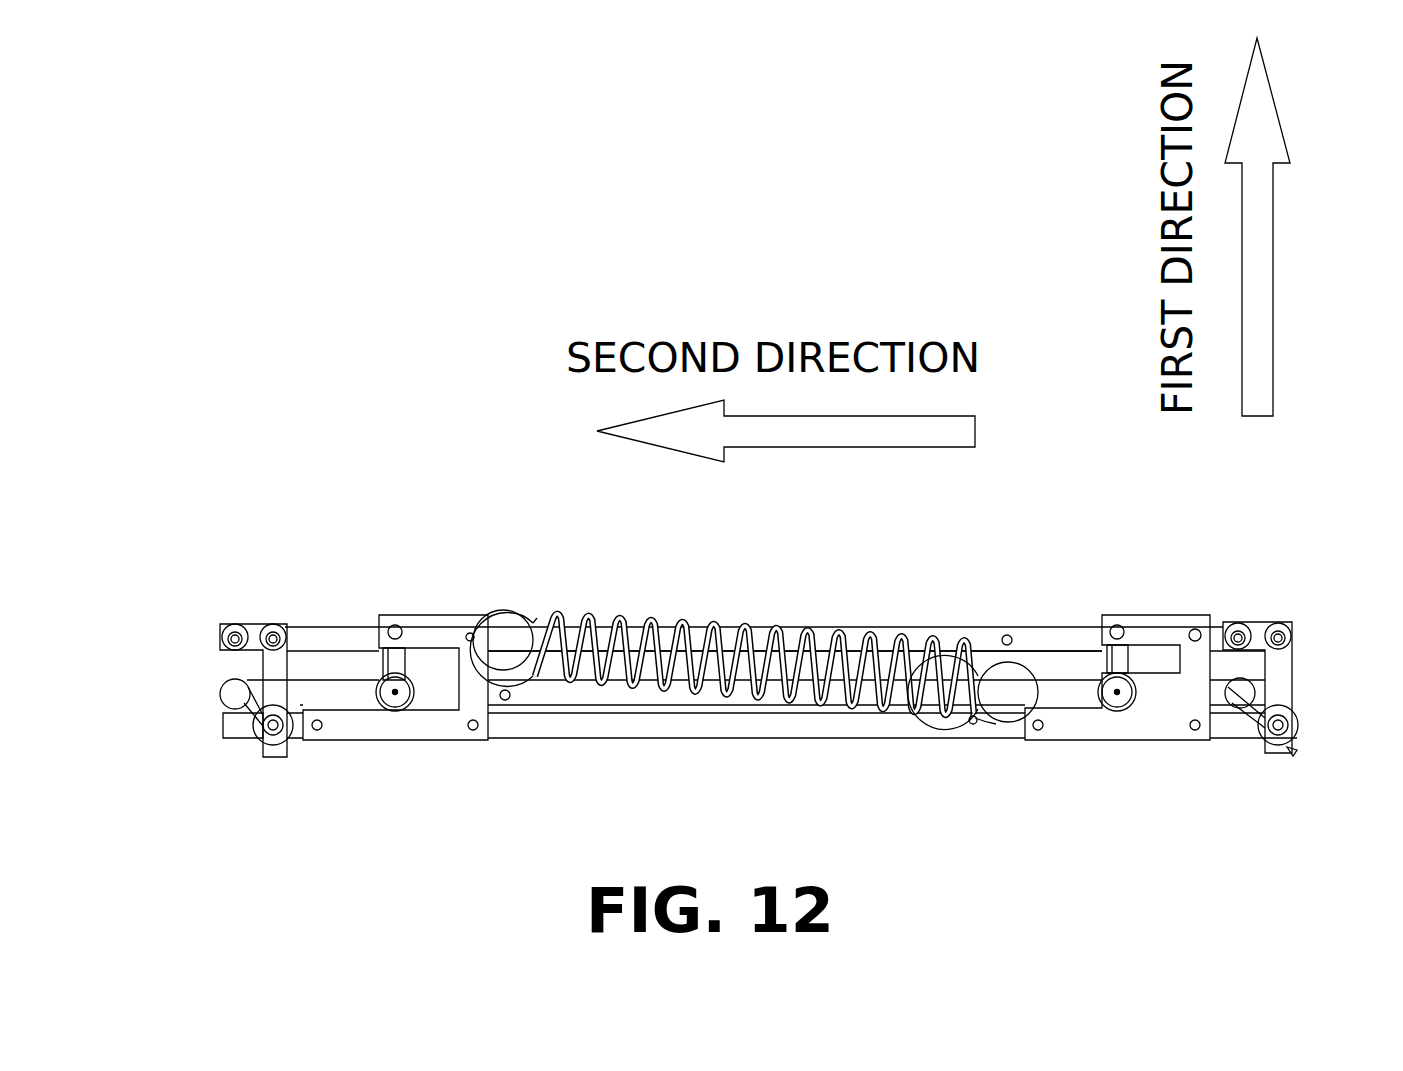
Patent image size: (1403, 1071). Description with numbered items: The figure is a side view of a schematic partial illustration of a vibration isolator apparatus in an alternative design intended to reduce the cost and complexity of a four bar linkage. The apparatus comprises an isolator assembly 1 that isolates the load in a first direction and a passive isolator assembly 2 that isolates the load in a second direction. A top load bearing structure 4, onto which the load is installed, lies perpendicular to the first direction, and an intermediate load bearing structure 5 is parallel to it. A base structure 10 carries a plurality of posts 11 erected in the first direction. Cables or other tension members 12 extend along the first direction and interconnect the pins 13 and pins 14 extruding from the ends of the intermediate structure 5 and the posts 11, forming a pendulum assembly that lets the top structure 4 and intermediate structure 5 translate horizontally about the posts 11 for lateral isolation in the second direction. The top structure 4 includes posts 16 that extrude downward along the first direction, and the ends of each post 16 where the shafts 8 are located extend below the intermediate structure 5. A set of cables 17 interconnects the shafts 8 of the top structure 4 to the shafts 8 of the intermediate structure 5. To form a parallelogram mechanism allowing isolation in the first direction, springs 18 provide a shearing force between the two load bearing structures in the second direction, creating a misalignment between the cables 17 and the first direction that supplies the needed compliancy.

The isolator assembly 1 is at (331, 697).
The passive isolator assembly 2 is at (623, 751).
The top load bearing structure 4 is at (943, 639).
The intermediate load bearing structure 5 is at (642, 690).
The shafts 8 is at (235, 694).
The base structure 10 is at (520, 727).
The posts 11 is at (440, 725).
The cables or tension members 12 is at (384, 661).
The pins 13 is at (395, 692).
The pins 14 is at (395, 631).
The posts 16 is at (273, 744).
The cables 17 is at (244, 717).
The springs 18 is at (972, 722).